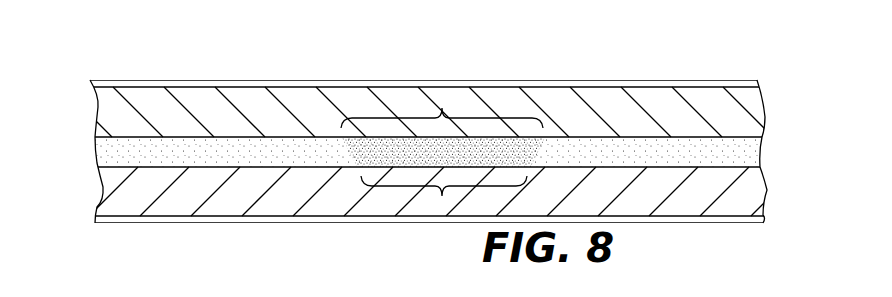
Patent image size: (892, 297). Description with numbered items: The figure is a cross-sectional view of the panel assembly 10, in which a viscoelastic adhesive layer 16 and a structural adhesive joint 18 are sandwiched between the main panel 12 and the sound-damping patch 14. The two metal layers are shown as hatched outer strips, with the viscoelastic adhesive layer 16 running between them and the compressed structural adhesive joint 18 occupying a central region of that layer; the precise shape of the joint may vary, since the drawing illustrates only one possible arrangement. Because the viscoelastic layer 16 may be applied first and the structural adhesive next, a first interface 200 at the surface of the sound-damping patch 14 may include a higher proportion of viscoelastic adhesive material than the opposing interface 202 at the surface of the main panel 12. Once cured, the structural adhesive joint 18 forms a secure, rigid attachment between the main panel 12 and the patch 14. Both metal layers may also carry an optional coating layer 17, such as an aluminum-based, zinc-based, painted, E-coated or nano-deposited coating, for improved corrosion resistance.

The panel assembly 10 is at (431, 116).
The main panel 12 is at (444, 191).
The sound-damping patch 14 is at (417, 112).
The viscoelastic adhesive layer 16 is at (430, 109).
The coating layer 17 is at (427, 151).
The structural adhesive joint 18 is at (497, 150).
The first interface 200 is at (442, 108).
The opposing interface 202 is at (442, 196).